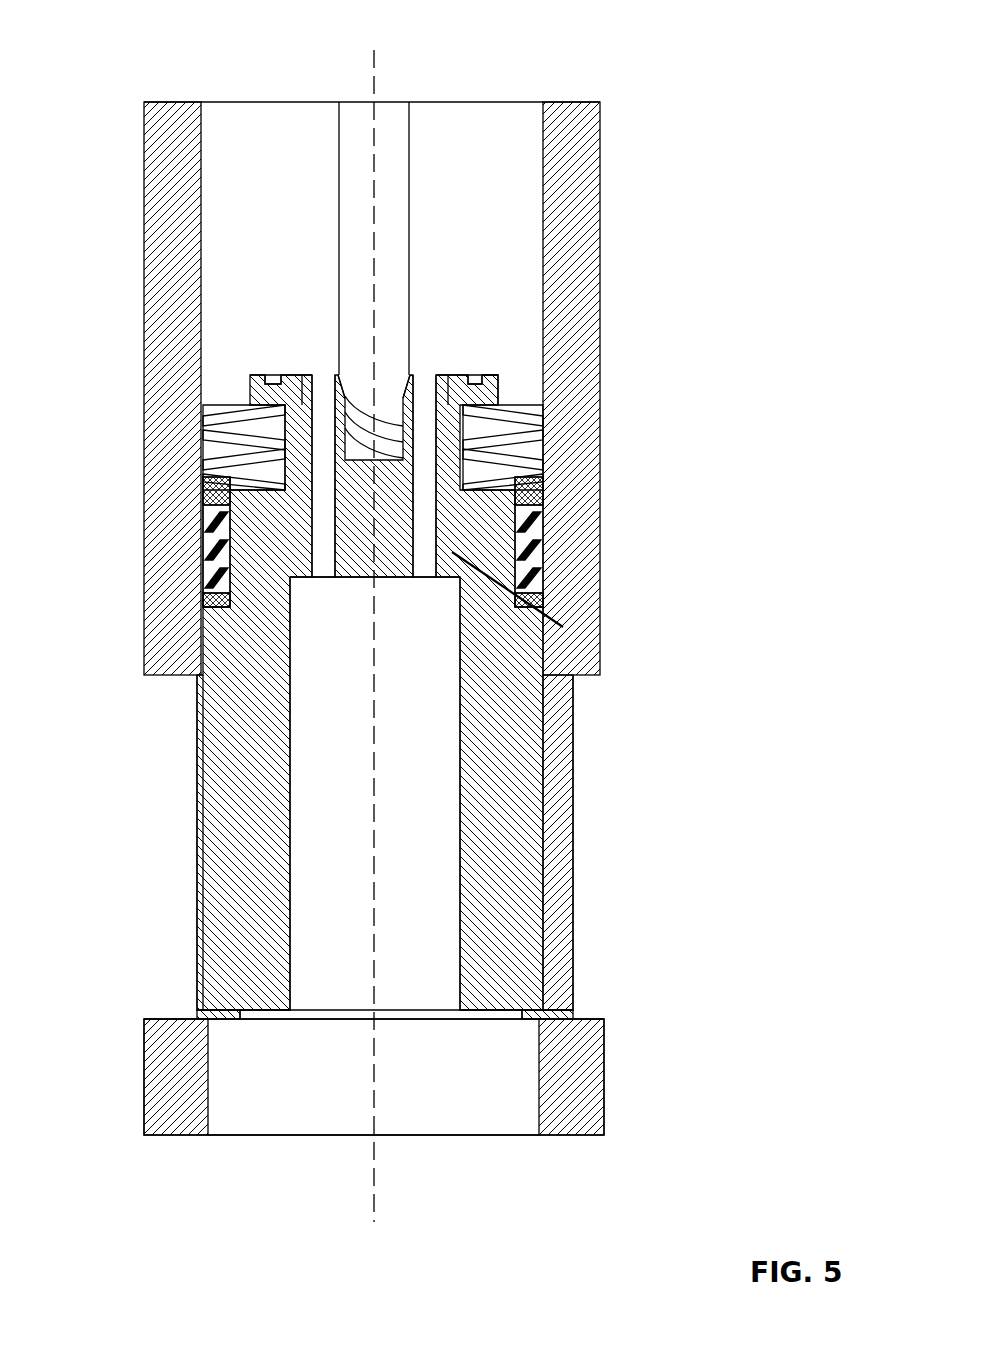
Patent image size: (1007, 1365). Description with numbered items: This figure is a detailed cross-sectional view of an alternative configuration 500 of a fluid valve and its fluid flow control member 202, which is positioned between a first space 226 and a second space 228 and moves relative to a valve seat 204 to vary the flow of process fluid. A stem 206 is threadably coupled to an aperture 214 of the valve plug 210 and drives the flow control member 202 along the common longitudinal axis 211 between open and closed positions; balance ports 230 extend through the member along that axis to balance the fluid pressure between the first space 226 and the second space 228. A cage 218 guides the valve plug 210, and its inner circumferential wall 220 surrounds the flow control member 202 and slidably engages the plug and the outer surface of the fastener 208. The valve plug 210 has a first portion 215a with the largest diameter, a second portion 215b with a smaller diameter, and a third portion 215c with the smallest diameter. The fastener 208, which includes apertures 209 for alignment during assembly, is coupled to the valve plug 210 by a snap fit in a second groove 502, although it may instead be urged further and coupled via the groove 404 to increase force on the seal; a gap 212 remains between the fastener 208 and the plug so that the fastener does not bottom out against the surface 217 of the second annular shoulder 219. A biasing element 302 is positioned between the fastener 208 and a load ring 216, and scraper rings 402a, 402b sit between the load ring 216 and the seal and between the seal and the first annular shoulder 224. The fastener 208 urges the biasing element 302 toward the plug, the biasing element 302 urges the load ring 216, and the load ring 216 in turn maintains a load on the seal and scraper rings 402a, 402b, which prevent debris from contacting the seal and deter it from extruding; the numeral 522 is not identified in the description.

The alternative configuration 500 is at (96, 35).
The wall 220 is at (208, 112).
The stem 206 is at (410, 108).
The first space 226 is at (296, 190).
The fluid flow control member 202 is at (268, 252).
The cage 218 is at (143, 312).
The apertures 209 is at (261, 363).
The fastener 208 is at (251, 388).
The balance port 230 is at (318, 361).
The second groove 502 is at (470, 376).
The aperture 214 is at (402, 418).
The third portion 215c is at (440, 420).
The biasing element 302 is at (535, 440).
The load ring 216 is at (475, 477).
The scraper ring 402a is at (530, 488).
The groove 404 is at (520, 500).
The second annular shoulder 219 is at (535, 520).
The scraper ring 402b is at (540, 597).
The second portion 215b is at (563, 627).
The gap 212 is at (231, 478).
The surface 217 is at (231, 491).
The housing bore wall 522 is at (184, 564).
The first annular shoulder 224 is at (220, 608).
The first portion 215a is at (525, 745).
The valve plug 210 is at (497, 790).
The common longitudinal axis 211 is at (377, 894).
The valve seat 204 is at (146, 1080).
The second space 228 is at (312, 1081).